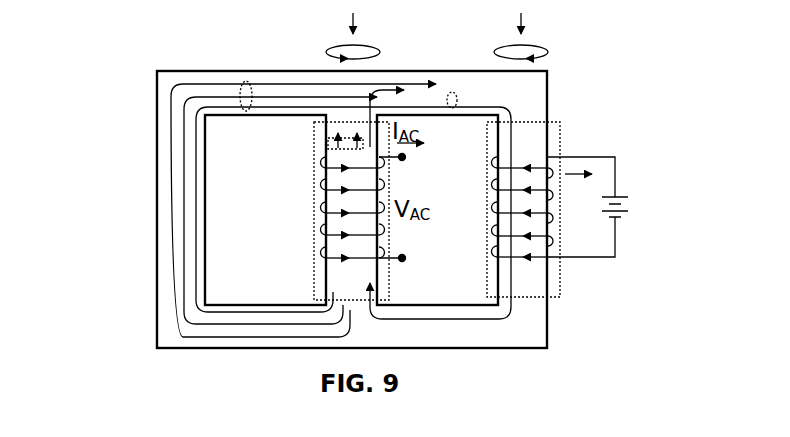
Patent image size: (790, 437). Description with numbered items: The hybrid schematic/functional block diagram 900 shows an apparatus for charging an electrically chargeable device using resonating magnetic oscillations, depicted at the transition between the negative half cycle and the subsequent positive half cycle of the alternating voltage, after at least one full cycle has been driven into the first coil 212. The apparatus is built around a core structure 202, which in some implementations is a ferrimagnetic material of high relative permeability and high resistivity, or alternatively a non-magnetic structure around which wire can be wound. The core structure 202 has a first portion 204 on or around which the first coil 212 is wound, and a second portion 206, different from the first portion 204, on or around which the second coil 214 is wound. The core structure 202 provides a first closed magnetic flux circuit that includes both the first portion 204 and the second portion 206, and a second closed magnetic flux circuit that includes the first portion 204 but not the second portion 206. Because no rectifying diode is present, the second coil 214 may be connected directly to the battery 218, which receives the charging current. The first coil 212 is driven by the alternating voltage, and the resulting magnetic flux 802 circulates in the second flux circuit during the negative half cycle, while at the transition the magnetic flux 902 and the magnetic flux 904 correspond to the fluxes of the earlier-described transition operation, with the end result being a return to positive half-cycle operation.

The hybrid schematic/functional block diagram 900 is at (138, 40).
The core structure 202 is at (172, 73).
The first portion 204 is at (316, 222).
The second portion 206 is at (487, 177).
The first coil 212 is at (318, 245).
The second coil 214 is at (487, 188).
The battery 218 is at (628, 195).
The magnetic flux 802 is at (246, 80).
The magnetic flux 902 is at (328, 148).
The magnetic flux 904 is at (452, 92).